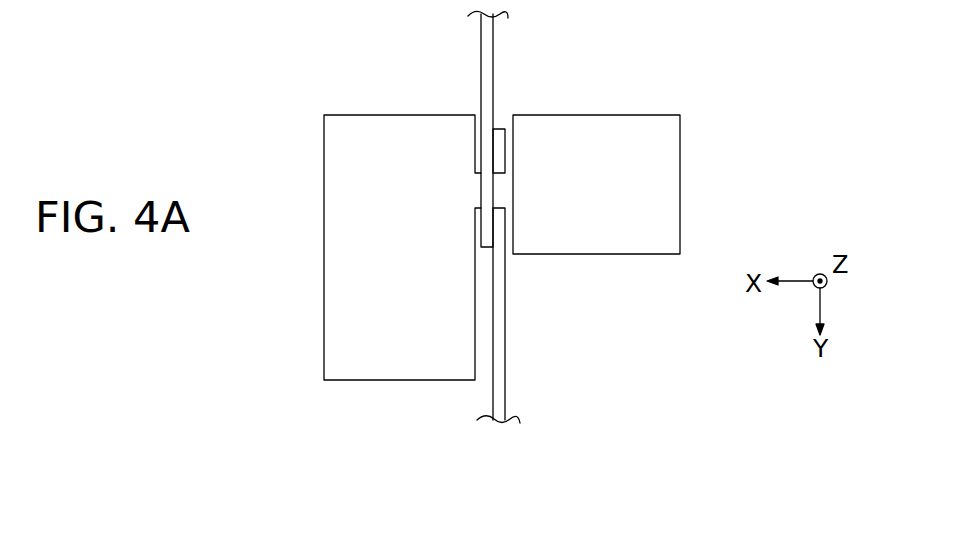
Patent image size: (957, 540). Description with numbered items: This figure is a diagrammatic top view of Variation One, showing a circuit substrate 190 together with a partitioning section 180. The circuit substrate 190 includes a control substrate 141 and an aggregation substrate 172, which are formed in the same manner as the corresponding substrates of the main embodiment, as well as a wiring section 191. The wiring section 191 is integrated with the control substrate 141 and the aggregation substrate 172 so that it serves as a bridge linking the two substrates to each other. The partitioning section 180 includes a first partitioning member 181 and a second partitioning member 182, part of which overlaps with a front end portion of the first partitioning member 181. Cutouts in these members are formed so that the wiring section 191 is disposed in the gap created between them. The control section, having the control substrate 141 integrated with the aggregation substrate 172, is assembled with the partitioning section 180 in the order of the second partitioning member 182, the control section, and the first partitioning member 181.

The control substrate 141 is at (395, 128).
The aggregation substrate 172 is at (672, 138).
The partitioning section 180 is at (597, 28).
The first partitioning member 181 is at (493, 40).
The second partitioning member 182 is at (500, 148).
The circuit substrate 190 is at (694, 191).
The wiring section 191 is at (500, 192).